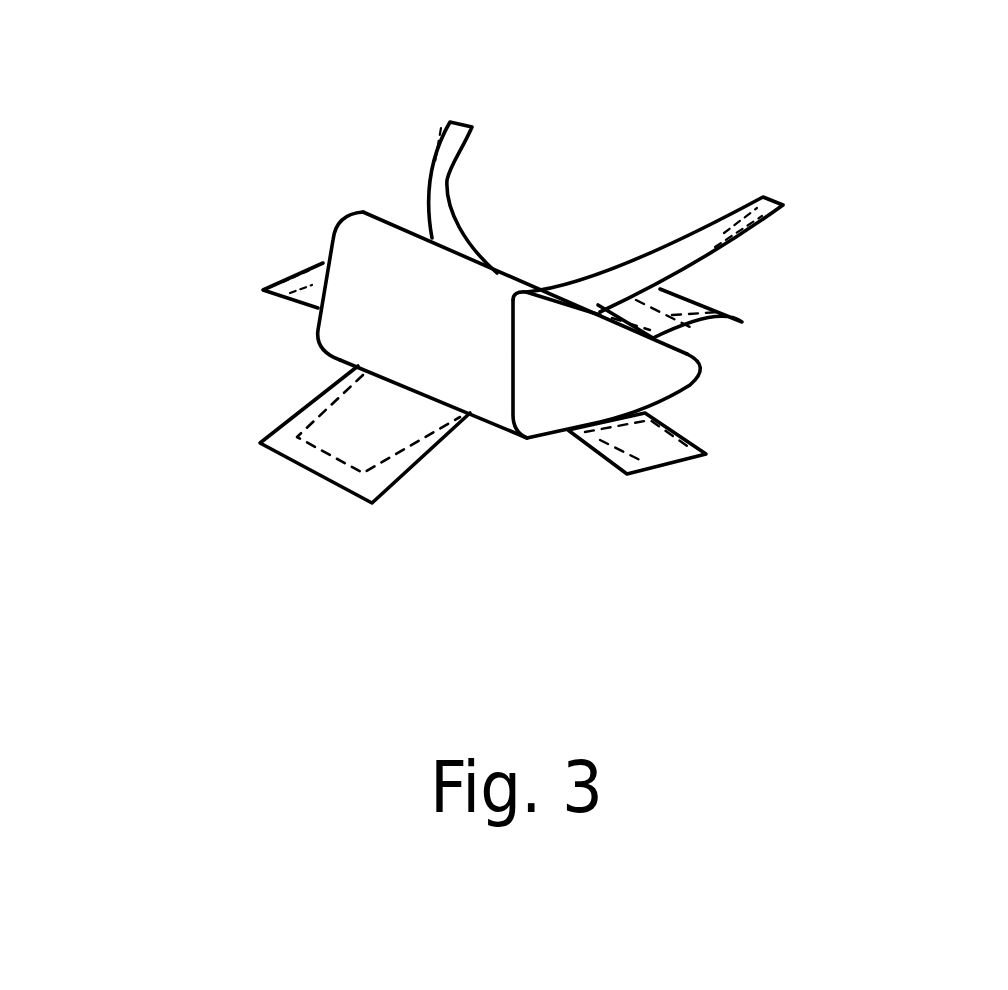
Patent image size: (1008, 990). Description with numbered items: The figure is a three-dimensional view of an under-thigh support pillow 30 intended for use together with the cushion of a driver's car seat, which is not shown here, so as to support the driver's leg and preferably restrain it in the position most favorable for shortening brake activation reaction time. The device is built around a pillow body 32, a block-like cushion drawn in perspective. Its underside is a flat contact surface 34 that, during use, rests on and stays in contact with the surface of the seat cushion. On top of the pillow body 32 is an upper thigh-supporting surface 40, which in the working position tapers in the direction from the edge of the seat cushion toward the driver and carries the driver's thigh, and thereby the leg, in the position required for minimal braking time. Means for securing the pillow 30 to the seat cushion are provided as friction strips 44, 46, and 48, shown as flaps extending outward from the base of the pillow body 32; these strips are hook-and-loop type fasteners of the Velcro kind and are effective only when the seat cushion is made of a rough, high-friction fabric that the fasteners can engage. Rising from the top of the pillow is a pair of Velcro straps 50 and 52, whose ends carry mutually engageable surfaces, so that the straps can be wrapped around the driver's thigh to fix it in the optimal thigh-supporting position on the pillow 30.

The under-thigh support pillow 30 is at (273, 223).
The pillow body 32 is at (452, 328).
The flat contact surface 34 is at (535, 438).
The upper thigh-supporting surface 40 is at (524, 290).
The friction strip 44 is at (333, 448).
The friction strip 46 is at (263, 290).
The friction strip 48 is at (706, 456).
The Velcro strap 50 is at (450, 178).
The Velcro strap 52 is at (773, 197).